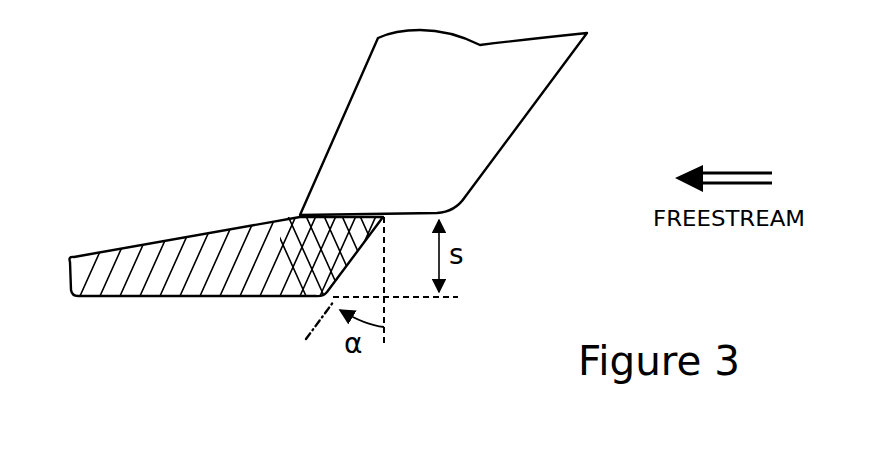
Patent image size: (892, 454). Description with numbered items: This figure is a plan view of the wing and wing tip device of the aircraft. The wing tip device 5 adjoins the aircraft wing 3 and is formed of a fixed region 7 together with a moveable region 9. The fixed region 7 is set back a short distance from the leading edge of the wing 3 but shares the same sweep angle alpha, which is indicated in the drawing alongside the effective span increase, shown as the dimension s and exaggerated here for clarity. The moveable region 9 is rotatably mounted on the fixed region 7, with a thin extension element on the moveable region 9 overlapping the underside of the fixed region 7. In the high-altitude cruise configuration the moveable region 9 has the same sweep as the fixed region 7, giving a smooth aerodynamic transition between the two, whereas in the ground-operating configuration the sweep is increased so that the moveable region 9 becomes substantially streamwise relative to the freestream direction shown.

The aircraft wing 3 is at (468, 132).
The wing tip device 5 is at (195, 212).
The fixed region 7 is at (343, 247).
The moveable region 9 is at (167, 282).